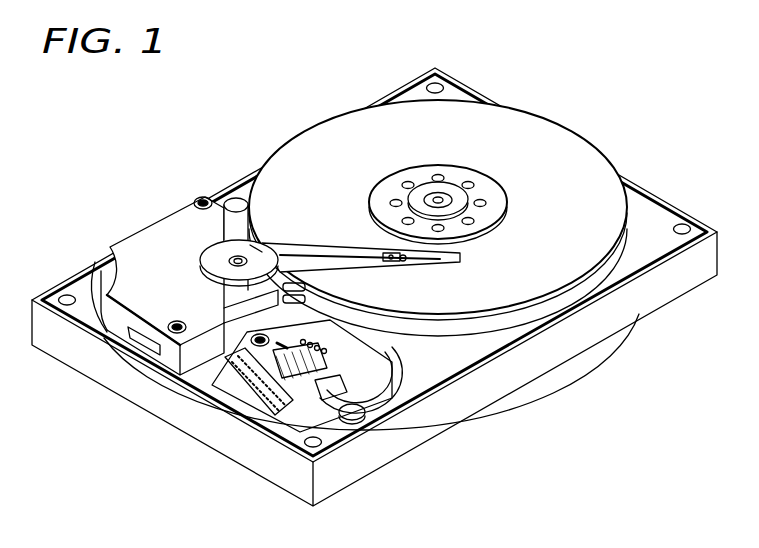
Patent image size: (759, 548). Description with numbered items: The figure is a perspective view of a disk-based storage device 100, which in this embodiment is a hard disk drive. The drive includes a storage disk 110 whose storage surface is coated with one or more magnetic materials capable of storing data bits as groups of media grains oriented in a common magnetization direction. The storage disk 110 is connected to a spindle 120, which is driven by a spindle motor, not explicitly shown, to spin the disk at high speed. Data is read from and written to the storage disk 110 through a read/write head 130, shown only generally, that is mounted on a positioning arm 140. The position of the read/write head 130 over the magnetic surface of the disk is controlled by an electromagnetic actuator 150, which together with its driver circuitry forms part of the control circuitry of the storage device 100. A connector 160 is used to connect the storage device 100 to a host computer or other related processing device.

The disk-based storage device 100 is at (156, 113).
The storage disk 110 is at (553, 138).
The spindle 120 is at (459, 197).
The read/write head 130 is at (430, 255).
The positioning arm 140 is at (303, 248).
The electromagnetic actuator 150 is at (138, 247).
The connector 160 is at (255, 380).